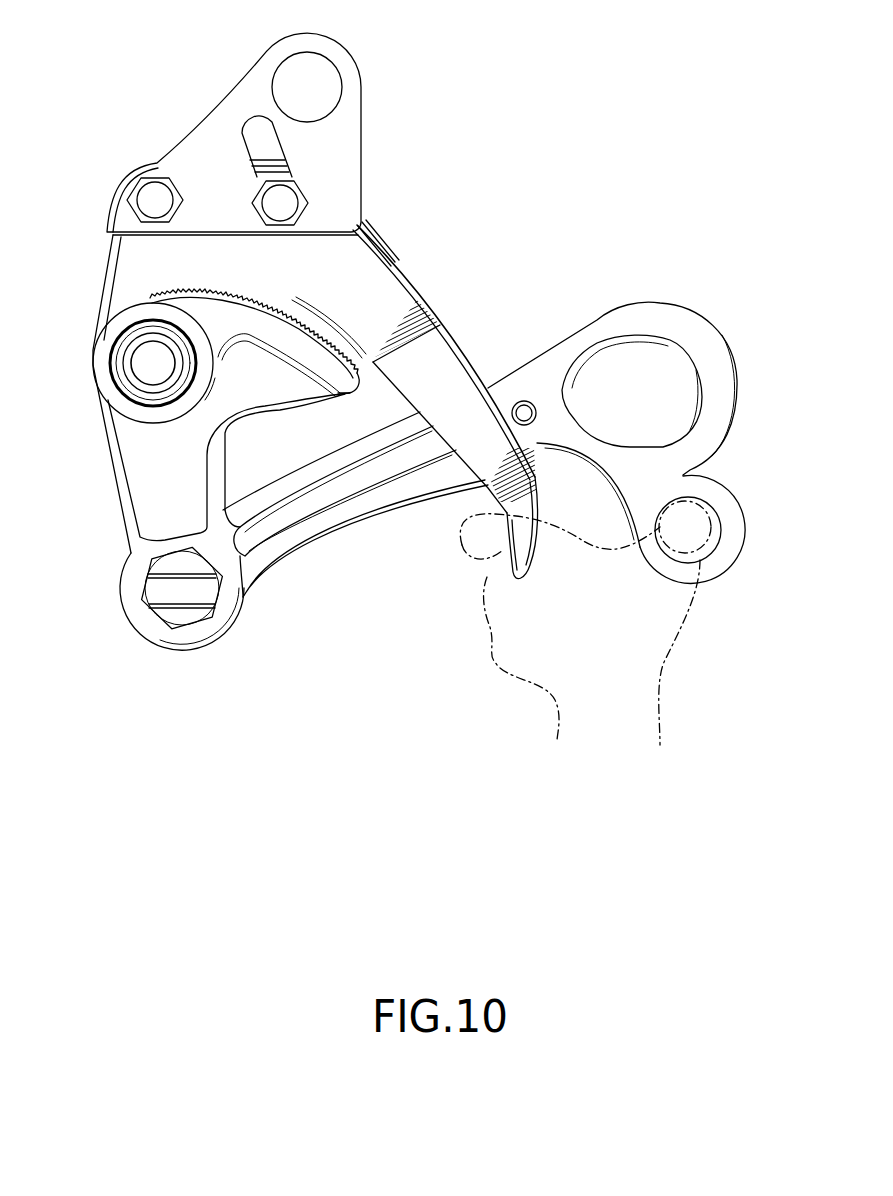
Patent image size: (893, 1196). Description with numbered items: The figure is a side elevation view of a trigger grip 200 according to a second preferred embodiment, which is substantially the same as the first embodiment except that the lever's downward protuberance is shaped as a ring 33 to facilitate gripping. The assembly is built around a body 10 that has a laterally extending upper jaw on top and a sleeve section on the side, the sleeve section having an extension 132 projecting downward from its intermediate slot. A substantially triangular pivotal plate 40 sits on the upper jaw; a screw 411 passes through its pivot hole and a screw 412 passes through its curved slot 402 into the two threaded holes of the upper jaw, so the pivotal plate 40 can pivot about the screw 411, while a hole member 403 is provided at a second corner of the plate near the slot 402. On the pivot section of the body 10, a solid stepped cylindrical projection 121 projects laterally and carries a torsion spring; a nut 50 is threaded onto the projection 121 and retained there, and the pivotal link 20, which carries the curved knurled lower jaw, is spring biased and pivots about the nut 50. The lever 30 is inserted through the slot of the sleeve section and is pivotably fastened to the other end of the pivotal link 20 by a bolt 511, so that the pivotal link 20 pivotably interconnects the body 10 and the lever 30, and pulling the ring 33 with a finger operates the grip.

The body 10 is at (383, 290).
The pivotal link 20 is at (155, 490).
The lever 30 is at (573, 343).
The ring 33 is at (730, 560).
The pivotal plate 40 is at (205, 150).
The nut 50 is at (130, 383).
The cylindrical projection 121 is at (143, 357).
The extension 132 is at (517, 552).
The trigger grip 200 is at (450, 197).
The curved slot 402 is at (257, 125).
The hole member 403 is at (330, 80).
The screw 411 is at (157, 197).
The screw 412 is at (285, 197).
The bolt 511 is at (190, 620).